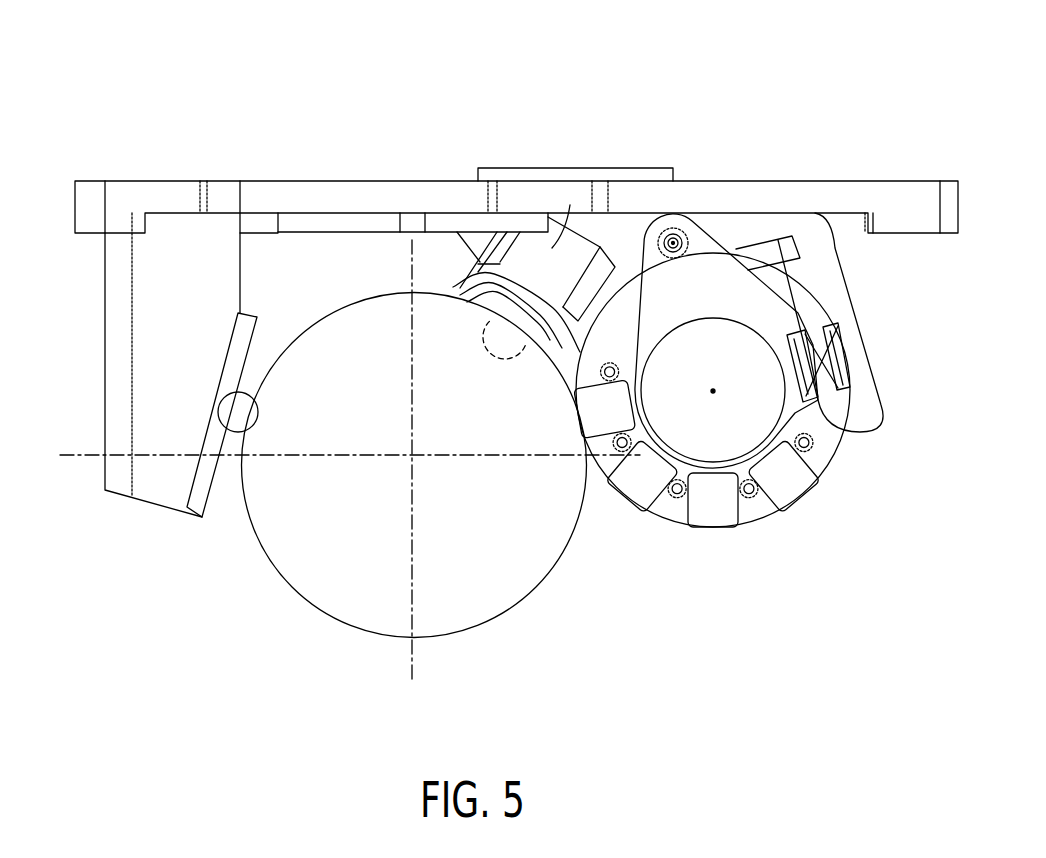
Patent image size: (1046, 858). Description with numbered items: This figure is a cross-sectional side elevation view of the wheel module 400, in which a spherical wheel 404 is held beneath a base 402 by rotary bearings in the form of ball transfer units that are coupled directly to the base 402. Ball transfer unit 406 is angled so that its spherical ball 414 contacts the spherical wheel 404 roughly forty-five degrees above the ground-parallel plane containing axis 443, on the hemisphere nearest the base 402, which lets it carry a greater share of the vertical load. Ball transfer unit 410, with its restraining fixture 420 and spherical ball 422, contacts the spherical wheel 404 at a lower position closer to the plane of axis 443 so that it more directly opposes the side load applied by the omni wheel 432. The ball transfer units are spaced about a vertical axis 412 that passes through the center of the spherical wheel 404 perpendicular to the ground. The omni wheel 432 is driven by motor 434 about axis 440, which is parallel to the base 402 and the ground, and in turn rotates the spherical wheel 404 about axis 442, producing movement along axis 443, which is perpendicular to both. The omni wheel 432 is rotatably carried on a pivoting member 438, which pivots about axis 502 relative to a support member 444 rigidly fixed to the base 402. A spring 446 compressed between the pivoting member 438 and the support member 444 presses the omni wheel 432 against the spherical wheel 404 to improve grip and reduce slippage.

The wheel module 400 is at (248, 62).
The base 402 is at (396, 186).
The spherical wheel 404 is at (374, 403).
The ball transfer unit 406 is at (456, 268).
The ball transfer unit 410 is at (150, 395).
The vertical axis 412 is at (570, 205).
The spherical ball 414 is at (517, 350).
The restraining fixture 420 is at (150, 406).
The spherical ball 422 is at (240, 368).
The omni wheel 432 is at (712, 435).
The motor 434 is at (735, 442).
The pivoting member 438 is at (763, 331).
The axis 440 is at (720, 388).
The axis 442 is at (416, 450).
The axis 443 is at (330, 458).
The support member 444 is at (860, 328).
The spring 446 is at (842, 352).
The axis 502 is at (680, 236).